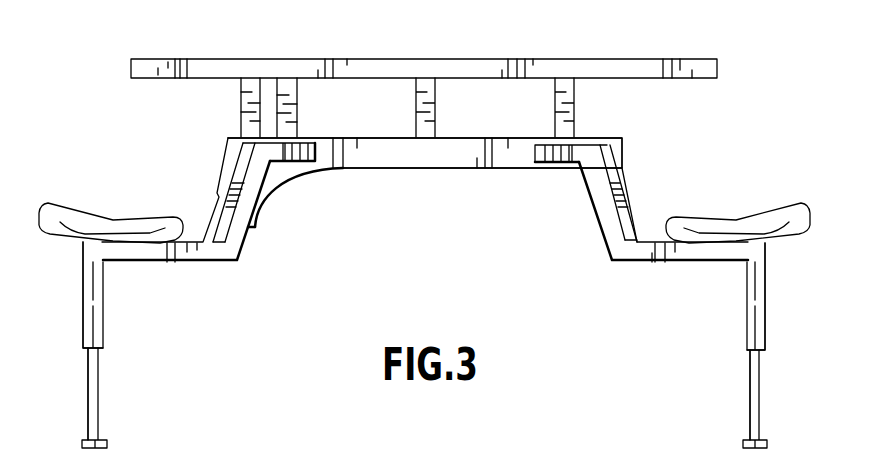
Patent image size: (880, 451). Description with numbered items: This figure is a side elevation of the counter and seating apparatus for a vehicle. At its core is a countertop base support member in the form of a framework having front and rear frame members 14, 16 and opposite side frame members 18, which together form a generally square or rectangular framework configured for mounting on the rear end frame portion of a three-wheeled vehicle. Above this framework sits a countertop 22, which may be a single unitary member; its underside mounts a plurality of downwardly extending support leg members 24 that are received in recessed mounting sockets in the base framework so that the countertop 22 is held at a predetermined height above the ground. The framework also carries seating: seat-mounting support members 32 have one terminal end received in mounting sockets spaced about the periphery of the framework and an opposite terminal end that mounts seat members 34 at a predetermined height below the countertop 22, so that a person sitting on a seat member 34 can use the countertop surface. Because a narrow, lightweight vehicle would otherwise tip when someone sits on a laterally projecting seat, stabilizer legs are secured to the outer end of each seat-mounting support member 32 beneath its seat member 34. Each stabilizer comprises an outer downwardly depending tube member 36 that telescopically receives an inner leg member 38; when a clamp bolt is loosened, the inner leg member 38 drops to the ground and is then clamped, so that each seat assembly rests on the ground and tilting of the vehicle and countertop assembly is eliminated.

The front frame member 14 is at (622, 150).
The rear frame member 16 is at (225, 163).
The side frame member 18 is at (430, 168).
The countertop 22 is at (433, 65).
The support leg member 24 is at (298, 104).
The seat-mounting support member 32 is at (155, 358).
The seat member 34 is at (87, 212).
The outer downwardly depending tube member 36 is at (103, 313).
The inner leg member 38 is at (88, 402).